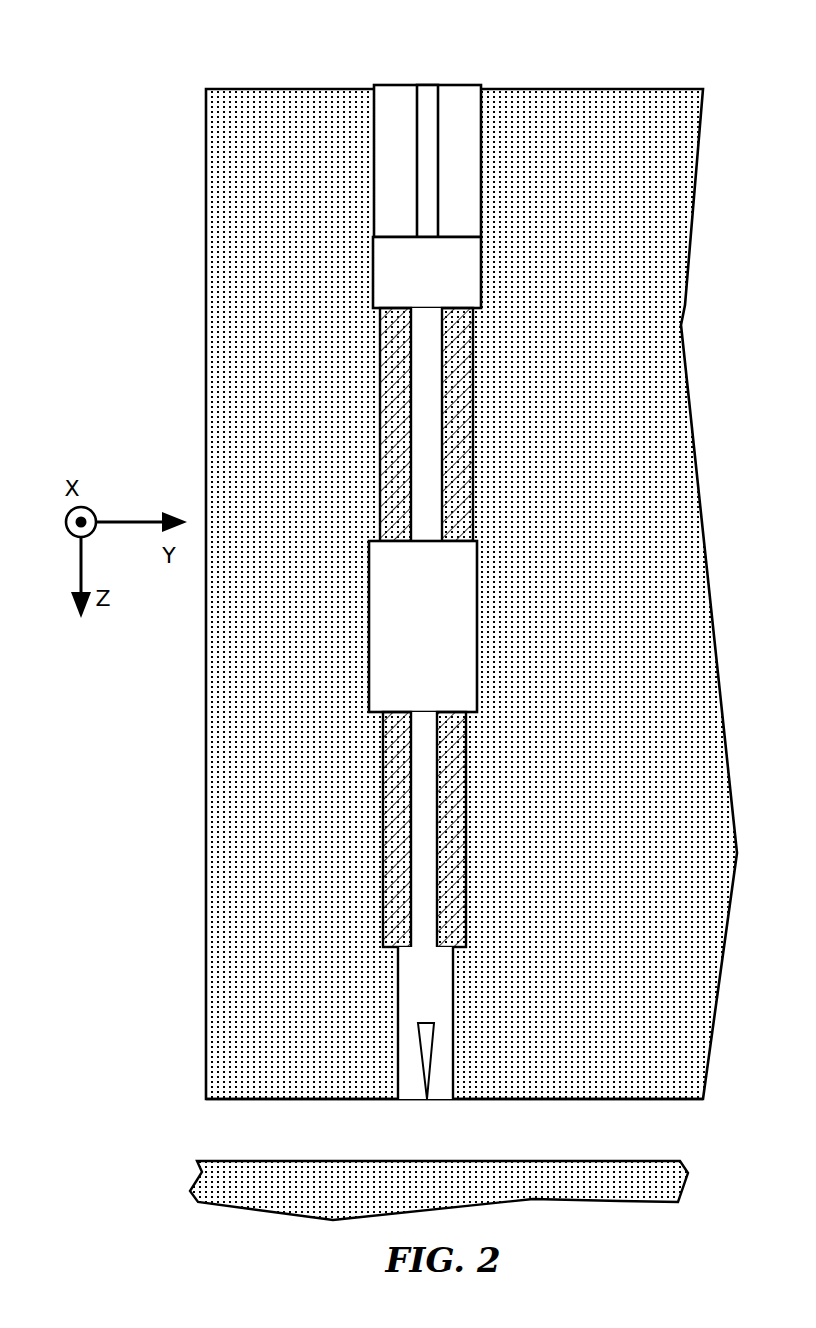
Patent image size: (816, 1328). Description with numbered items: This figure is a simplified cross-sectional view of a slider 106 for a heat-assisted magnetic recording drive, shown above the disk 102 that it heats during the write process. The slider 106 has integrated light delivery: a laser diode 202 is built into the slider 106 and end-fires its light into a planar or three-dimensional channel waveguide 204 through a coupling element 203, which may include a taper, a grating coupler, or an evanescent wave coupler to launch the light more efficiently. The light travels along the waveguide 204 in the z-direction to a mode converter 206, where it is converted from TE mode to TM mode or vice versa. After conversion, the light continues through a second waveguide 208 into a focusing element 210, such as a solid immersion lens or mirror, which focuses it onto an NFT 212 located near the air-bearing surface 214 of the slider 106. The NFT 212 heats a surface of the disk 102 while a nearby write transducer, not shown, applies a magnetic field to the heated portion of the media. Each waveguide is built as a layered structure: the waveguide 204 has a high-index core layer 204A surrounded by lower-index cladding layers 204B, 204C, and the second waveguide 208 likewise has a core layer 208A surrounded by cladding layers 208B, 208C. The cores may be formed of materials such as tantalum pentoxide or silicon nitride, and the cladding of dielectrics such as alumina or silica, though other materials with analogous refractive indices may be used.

The disk 102 is at (210, 1167).
The slider 106 is at (670, 56).
The laser diode 202 is at (477, 189).
The coupling element 203 is at (475, 266).
The channel waveguide 204 is at (459, 424).
The core layer 204A is at (437, 403).
The cladding layer 204B is at (392, 430).
The cladding layer 204C is at (466, 421).
The mode converter 206 is at (407, 637).
The second waveguide 208 is at (453, 829).
The core layer 208A is at (435, 825).
The cladding layer 208B is at (392, 851).
The cladding layer 208C is at (463, 847).
The focusing element 210 is at (452, 996).
The NFT 212 is at (423, 1020).
The air-bearing surface 214 is at (667, 1100).